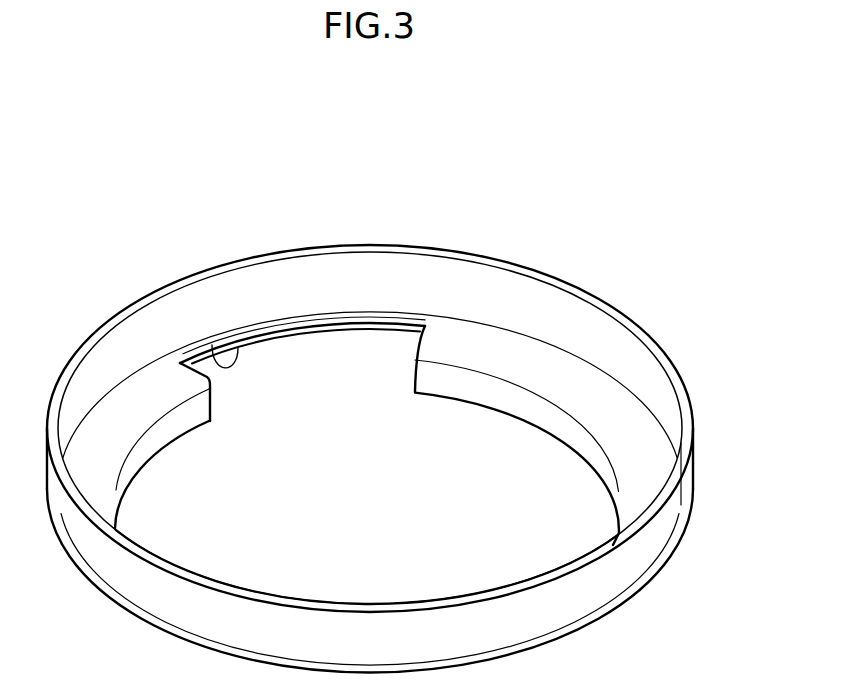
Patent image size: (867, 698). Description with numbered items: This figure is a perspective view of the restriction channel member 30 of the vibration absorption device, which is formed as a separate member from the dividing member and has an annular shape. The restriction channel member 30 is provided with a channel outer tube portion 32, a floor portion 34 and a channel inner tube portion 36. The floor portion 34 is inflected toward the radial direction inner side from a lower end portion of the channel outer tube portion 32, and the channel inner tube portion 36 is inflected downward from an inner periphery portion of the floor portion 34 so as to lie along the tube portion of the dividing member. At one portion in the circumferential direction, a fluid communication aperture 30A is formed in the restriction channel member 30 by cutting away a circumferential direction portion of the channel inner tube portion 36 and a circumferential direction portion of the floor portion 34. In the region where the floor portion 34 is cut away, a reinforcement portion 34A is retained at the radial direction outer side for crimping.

The restriction channel member 30 is at (487, 173).
The fluid communication aperture 30A is at (209, 368).
The channel outer tube portion 32 is at (690, 480).
The floor portion 34 is at (583, 395).
The reinforcement portion 34A is at (297, 320).
The channel inner tube portion 36 is at (498, 397).